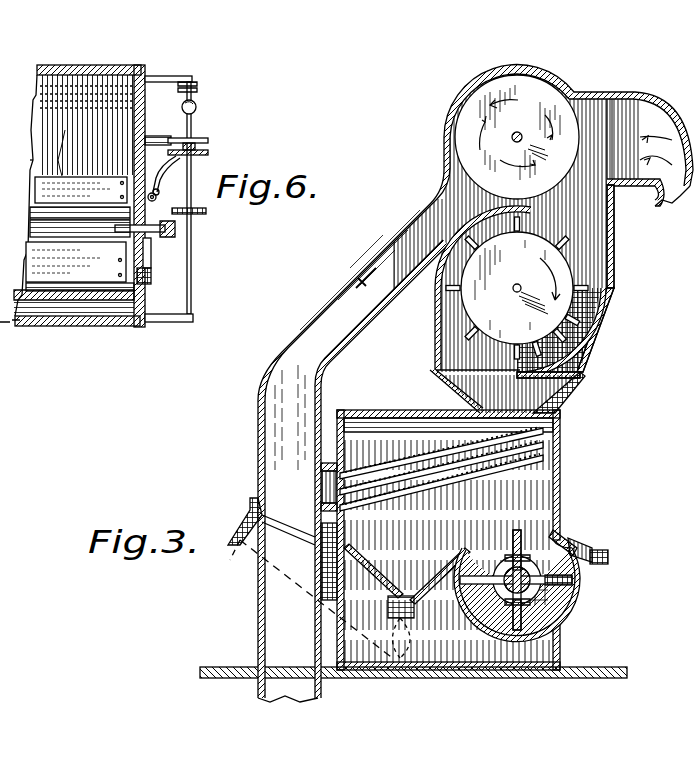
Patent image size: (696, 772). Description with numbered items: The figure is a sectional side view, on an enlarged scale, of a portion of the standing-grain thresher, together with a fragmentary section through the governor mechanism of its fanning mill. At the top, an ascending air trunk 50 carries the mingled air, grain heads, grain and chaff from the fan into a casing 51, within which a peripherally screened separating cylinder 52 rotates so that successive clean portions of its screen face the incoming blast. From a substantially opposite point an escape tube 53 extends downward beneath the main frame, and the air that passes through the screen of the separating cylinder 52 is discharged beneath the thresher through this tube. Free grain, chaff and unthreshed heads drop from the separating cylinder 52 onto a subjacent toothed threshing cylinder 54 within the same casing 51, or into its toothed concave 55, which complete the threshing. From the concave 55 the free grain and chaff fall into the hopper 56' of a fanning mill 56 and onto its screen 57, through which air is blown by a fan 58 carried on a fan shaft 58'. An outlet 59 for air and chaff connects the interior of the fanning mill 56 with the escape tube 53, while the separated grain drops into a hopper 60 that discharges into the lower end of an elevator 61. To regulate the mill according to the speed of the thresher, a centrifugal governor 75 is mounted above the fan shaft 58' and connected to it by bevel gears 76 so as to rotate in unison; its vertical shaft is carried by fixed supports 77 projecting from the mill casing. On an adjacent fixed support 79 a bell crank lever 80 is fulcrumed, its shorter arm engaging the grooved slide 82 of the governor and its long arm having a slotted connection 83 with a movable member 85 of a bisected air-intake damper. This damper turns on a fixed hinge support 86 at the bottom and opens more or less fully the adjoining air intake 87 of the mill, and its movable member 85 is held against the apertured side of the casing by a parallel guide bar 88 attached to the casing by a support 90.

In FIG. 3, the ascending air trunk 50 is at (650, 160).
In FIG. 3, the casing 51 is at (574, 92).
In FIG. 3, the separating cylinder 52 is at (612, 98).
In FIG. 3, the escape tube 53 is at (374, 232).
In FIG. 3, the threshing cylinder 54 is at (562, 282).
In FIG. 3, the concave 55 is at (590, 347).
In FIG. 3, the fanning mill 56 is at (468, 540).
In FIG. 6, the fanning mill 56 is at (72, 182).
In FIG. 3, the hopper of the fanning mill 56' is at (490, 391).
In FIG. 3, the screen 57 is at (402, 462).
In FIG. 6, the screen 57 is at (44, 100).
In FIG. 3, the fan 58 is at (540, 580).
In FIG. 6, the fan 58 is at (80, 174).
In FIG. 3, the fan shaft 58' is at (506, 571).
In FIG. 6, the fan shaft 58' is at (80, 265).
In FIG. 3, the outlet 59 is at (322, 487).
In FIG. 3, the hopper 60 is at (396, 572).
In FIG. 3, the elevator 61 is at (236, 514).
In FIG. 6, the centrifugal governor 75 is at (201, 104).
In FIG. 3, the bevel gears 76 is at (565, 540).
In FIG. 6, the bevel gears 76 is at (180, 230).
In FIG. 6, the fixed supports 77 is at (189, 76).
In FIG. 6, the fixed support 79 is at (155, 136).
In FIG. 6, the bell crank lever 80 is at (163, 173).
In FIG. 6, the grooved slide 82 is at (208, 148).
In FIG. 6, the slotted connection 83 is at (160, 194).
In FIG. 3, the movable damper member 85 is at (588, 545).
In FIG. 6, the movable damper member 85 is at (152, 255).
In FIG. 6, the fixed hinge support 86 is at (152, 278).
In FIG. 3, the air intake 87 is at (555, 600).
In FIG. 6, the guide bar 88 is at (198, 211).
In FIG. 3, the support 90 is at (608, 556).
In FIG. 6, the support 90 is at (28, 180).